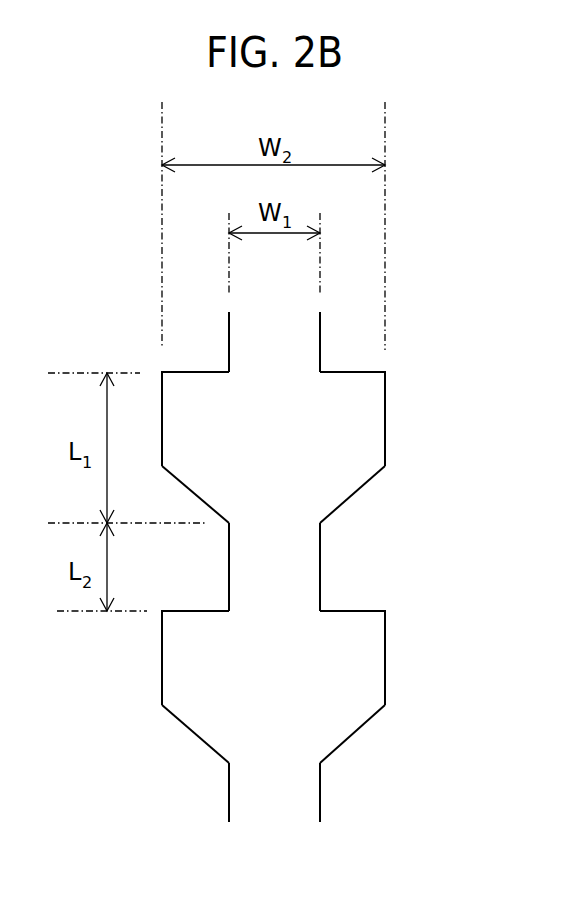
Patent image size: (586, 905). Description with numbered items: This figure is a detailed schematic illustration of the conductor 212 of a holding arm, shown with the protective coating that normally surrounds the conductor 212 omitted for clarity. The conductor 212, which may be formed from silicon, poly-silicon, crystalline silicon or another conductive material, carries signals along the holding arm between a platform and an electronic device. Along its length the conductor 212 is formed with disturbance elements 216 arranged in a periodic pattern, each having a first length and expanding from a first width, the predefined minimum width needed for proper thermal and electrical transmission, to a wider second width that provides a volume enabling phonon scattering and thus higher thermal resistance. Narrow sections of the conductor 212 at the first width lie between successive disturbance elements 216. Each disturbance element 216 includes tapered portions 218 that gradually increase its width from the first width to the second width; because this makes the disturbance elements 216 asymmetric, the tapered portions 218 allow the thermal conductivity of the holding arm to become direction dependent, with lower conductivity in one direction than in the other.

The conductor 212 is at (359, 536).
The disturbance elements 216 is at (373, 442).
The tapered portions 218 is at (349, 498).